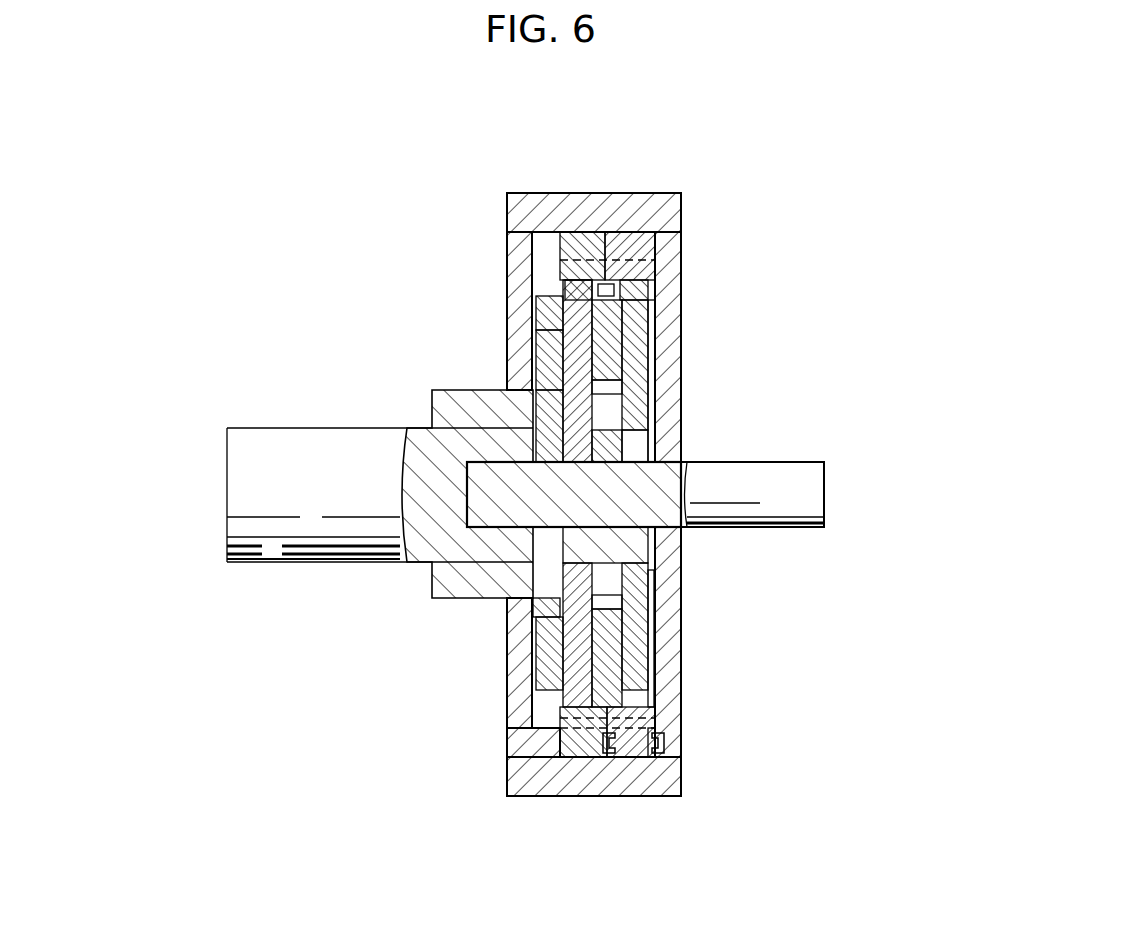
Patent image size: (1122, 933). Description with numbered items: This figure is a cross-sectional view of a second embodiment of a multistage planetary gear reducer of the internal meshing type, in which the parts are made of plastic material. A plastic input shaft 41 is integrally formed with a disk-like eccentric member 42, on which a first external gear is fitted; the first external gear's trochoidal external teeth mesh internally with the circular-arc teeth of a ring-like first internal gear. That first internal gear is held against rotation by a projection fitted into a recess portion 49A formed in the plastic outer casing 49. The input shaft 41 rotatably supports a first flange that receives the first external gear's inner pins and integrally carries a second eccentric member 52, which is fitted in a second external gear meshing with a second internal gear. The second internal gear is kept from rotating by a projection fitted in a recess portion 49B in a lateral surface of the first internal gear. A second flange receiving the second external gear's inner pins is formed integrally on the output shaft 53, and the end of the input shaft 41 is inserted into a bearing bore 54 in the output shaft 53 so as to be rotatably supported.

The input shaft 41 is at (810, 478).
The eccentric member 42 is at (633, 547).
The outer casing 49 is at (668, 660).
The recess portion 49A is at (660, 735).
The recess portion 49B is at (632, 745).
The eccentric member 52 is at (653, 580).
The output shaft 53 is at (272, 548).
The bearing bore 54 is at (473, 475).